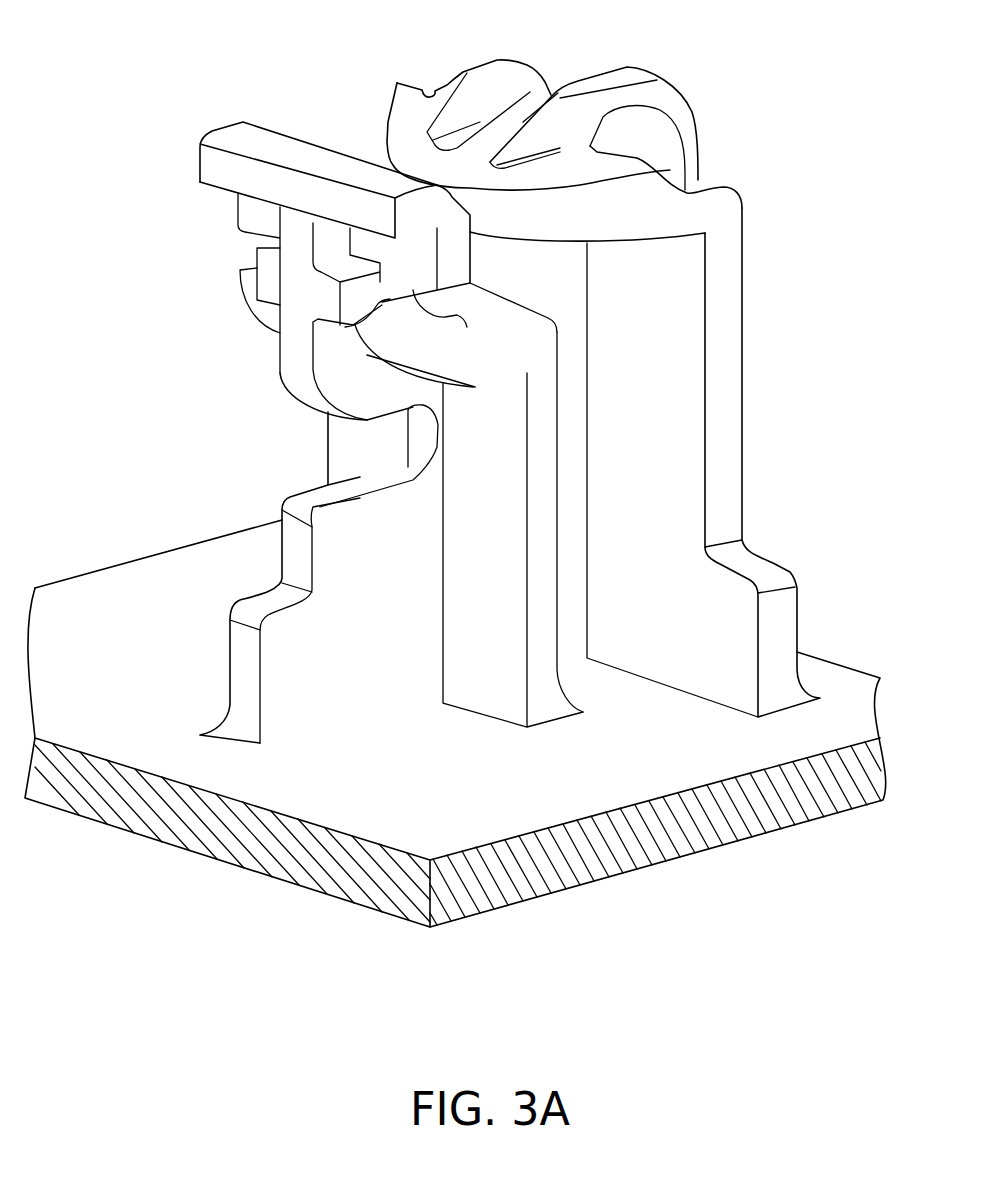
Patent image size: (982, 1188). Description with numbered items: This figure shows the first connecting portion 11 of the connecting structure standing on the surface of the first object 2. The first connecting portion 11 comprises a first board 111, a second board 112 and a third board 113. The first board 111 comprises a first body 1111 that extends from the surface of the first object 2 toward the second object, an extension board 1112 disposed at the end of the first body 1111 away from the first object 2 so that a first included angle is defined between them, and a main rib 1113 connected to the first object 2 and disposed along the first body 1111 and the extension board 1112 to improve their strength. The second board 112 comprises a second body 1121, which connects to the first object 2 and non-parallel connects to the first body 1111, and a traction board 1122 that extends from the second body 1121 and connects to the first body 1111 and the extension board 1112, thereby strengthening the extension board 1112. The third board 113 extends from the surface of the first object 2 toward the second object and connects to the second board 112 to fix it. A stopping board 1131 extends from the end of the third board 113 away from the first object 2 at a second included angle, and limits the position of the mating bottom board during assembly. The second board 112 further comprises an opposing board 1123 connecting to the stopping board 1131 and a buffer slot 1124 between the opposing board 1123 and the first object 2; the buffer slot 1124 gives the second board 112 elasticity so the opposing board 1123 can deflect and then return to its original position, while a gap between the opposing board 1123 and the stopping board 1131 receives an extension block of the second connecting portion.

The first object 2 is at (773, 807).
The first connecting portion 11 is at (347, 115).
The first board 111 is at (822, 57).
The first body 1111 is at (695, 270).
The extension board 1112 is at (703, 220).
The main rib 1113 is at (678, 107).
The second board 112 is at (840, 363).
The second body 1121 is at (383, 528).
The traction board 1122 is at (550, 272).
The opposing board 1123 is at (370, 220).
The buffer slot 1124 is at (425, 443).
The third board 113 is at (353, 452).
The stopping board 1131 is at (400, 338).